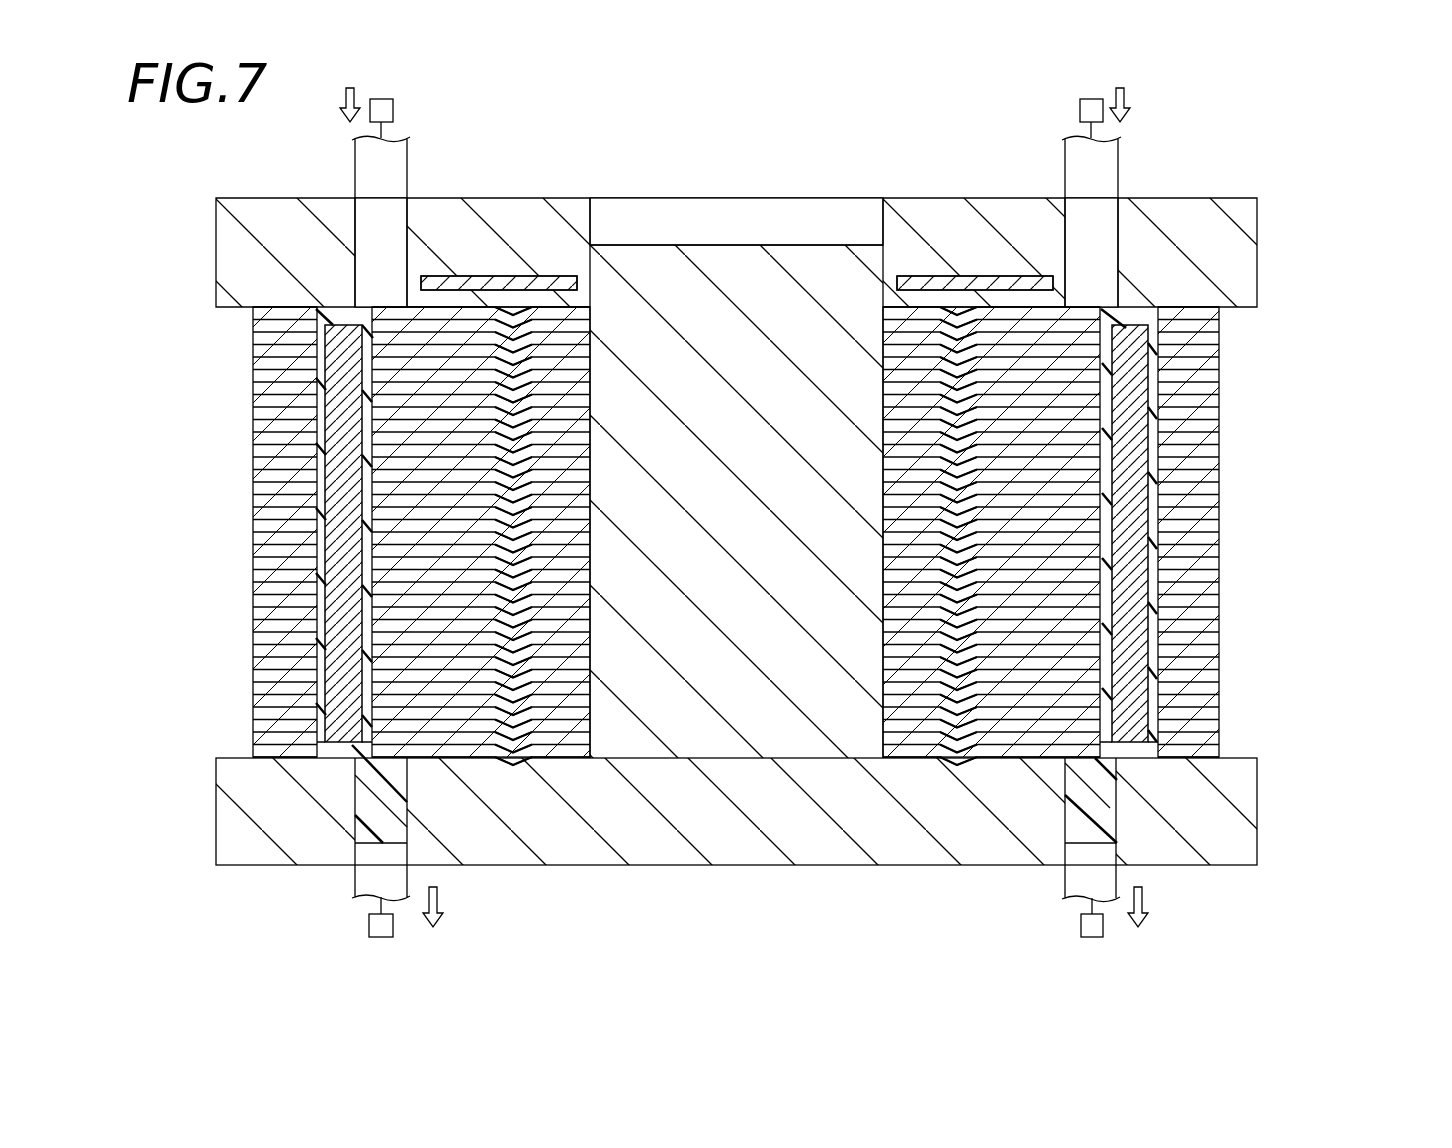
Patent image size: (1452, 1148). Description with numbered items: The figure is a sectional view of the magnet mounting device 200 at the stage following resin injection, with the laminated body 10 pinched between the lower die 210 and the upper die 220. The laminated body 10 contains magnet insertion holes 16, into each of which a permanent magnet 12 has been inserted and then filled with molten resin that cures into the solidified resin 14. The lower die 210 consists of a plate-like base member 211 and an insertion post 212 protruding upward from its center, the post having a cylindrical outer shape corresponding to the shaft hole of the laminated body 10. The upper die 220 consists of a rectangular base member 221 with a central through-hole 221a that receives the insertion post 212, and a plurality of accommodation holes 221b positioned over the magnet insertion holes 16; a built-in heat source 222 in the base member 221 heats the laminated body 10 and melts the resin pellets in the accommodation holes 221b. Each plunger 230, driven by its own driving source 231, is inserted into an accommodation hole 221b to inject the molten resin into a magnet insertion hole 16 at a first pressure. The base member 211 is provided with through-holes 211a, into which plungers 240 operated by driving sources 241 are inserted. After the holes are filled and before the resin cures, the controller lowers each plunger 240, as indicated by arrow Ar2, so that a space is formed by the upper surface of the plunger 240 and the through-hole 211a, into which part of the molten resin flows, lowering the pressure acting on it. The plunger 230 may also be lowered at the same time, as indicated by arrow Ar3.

The magnet mounting device 200 is at (1365, 162).
The upper die 220 is at (1282, 244).
The base member 221 is at (1237, 215).
The through-hole 221a is at (592, 223).
The accommodation hole 221b is at (365, 262).
The built-in heat source 222 is at (530, 273).
The insertion post 212 is at (755, 250).
The plunger 230 is at (407, 158).
The driving source 231 is at (394, 100).
The arrow Ar3 is at (345, 106).
The laminated body 10 is at (1265, 612).
The permanent magnet 12 is at (340, 372).
The solidified resin 14 is at (325, 750).
The magnet insertion hole 16 is at (320, 312).
The lower die 210 is at (1288, 770).
The base member 211 is at (1245, 863).
The through-hole 211a is at (365, 812).
The plunger 240 is at (355, 890).
The driving source 241 is at (369, 926).
The arrow Ar2 is at (440, 905).